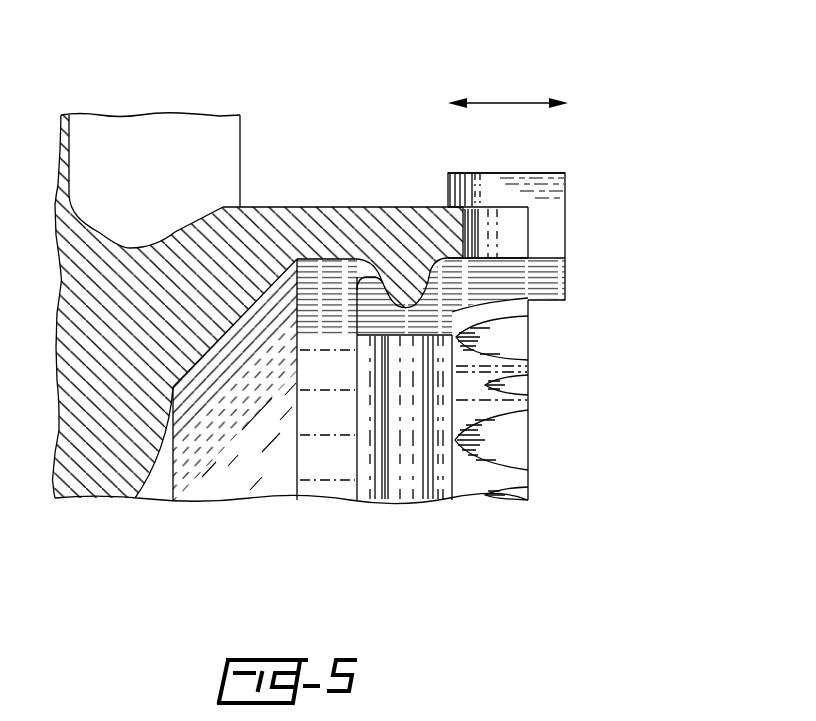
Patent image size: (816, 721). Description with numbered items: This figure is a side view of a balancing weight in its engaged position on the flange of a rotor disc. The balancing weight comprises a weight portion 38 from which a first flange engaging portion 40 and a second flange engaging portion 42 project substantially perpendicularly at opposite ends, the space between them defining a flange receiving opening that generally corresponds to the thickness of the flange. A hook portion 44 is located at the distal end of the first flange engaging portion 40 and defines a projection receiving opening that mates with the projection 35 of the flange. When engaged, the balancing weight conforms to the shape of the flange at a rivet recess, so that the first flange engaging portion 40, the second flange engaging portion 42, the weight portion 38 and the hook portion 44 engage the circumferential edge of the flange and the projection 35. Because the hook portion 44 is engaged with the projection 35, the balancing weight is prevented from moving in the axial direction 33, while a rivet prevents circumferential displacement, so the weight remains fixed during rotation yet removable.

The axial displacement direction 33 is at (508, 103).
The projection 35 is at (386, 283).
The weight portion 38 is at (548, 229).
The first flange engaging portion 40 is at (528, 287).
The second flange engaging portion 42 is at (525, 192).
The hook portion 44 is at (368, 323).